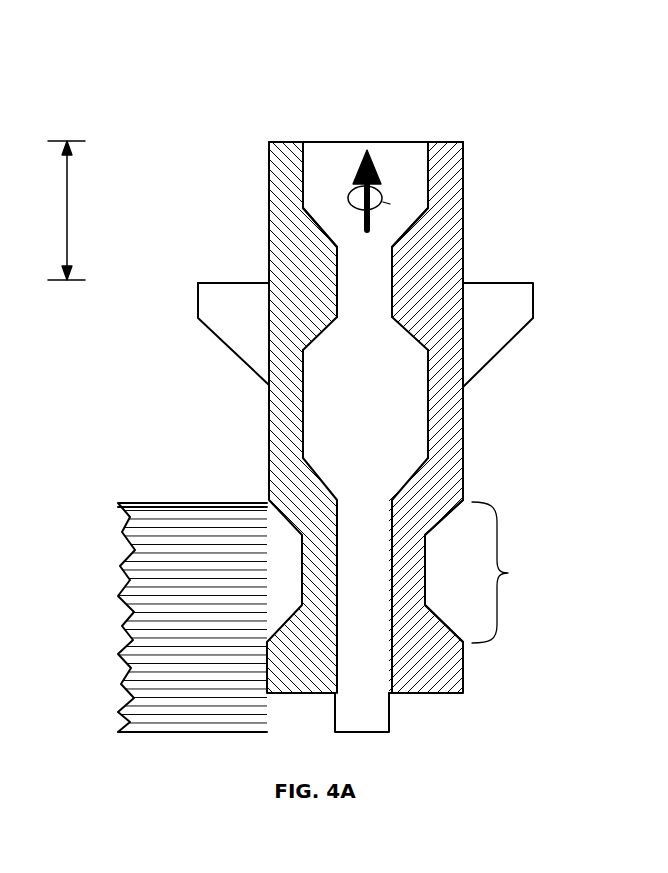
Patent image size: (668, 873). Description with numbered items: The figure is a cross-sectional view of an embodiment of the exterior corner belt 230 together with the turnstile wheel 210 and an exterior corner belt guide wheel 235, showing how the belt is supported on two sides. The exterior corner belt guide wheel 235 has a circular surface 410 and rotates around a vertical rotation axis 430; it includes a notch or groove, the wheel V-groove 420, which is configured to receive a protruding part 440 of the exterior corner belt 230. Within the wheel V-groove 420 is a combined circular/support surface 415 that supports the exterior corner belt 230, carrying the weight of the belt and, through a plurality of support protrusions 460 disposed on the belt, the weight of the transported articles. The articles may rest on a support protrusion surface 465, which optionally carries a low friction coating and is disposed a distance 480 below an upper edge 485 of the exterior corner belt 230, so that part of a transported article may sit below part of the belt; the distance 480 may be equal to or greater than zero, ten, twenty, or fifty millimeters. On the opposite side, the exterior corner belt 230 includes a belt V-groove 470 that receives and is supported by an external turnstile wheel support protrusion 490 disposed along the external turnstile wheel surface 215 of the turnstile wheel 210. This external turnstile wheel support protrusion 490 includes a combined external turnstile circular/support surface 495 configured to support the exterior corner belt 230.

The turnstile wheel 210 is at (195, 502).
The external turnstile wheel surface 215 is at (283, 512).
The exterior corner belt 230 is at (269, 153).
The exterior corner belt guide wheel 235 is at (390, 713).
The circular surface 410 is at (311, 152).
The combined circular/support surface 415 is at (411, 335).
The wheel V-groove 420 is at (391, 288).
The vertical rotation axis 430 is at (367, 150).
The protruding part 440 is at (327, 282).
The support protrusion 460 is at (212, 332).
The support protrusion surface 465 is at (220, 282).
The belt V-groove 470 is at (508, 573).
The distance 480 is at (67, 183).
The upper edge 485 is at (290, 142).
The external turnstile wheel support protrusion 490 is at (238, 502).
The combined external turnstile circular/support surface 495 is at (293, 567).